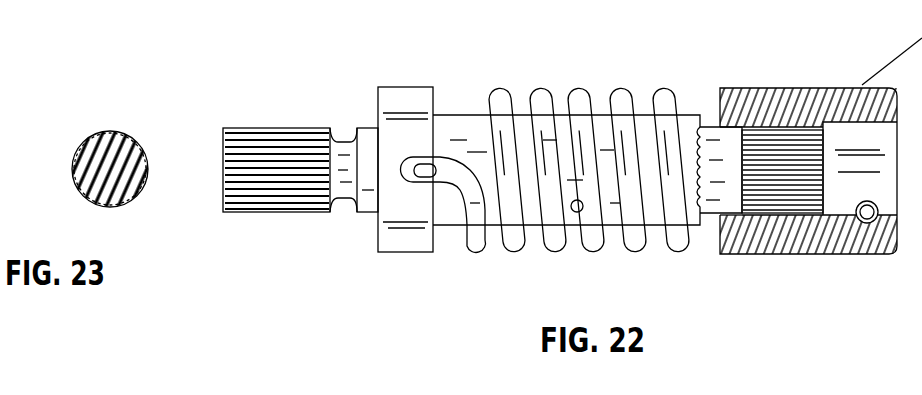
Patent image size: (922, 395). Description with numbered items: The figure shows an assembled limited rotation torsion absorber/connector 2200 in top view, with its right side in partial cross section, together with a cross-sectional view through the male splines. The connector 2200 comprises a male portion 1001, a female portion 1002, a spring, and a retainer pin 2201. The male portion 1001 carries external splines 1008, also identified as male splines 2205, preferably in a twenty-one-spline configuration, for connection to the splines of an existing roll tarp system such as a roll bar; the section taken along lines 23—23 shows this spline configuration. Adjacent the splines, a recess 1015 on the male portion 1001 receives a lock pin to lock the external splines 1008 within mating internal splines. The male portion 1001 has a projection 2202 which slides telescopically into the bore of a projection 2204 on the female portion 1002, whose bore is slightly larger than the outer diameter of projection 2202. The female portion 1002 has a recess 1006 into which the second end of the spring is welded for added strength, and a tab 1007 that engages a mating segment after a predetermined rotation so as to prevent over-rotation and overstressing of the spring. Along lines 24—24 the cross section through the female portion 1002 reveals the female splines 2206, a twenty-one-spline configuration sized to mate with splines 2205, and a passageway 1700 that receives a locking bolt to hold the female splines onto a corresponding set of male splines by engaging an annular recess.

In FIG. 22, the section lines 23— 23 is at (230, 190).
In FIG. 22, the section lines 24— 24 is at (820, 181).
In FIG. 22, the male portion 1001 is at (369, 154).
In FIG. 22, the female portion 1002 is at (553, 138).
In FIG. 22, the recess 1006 is at (706, 129).
In FIG. 22, the tab 1007 is at (589, 150).
In FIG. 22, the external splines 1008 is at (225, 157).
In FIG. 22, the recess 1015 is at (373, 221).
In FIG. 22, the passageway 1700 is at (821, 176).
In FIG. 22, the limited rotation torsion absorber/connector 2200 is at (506, 197).
In FIG. 22, the retainer pin 2201 is at (607, 252).
In FIG. 22, the projection 2202 is at (461, 144).
In FIG. 22, the projection 2204 is at (733, 130).
In FIG. 23, the external splines 2205 is at (127, 200).
In FIG. 22, the external splines 2205 is at (290, 231).
In FIG. 22, the female splines 2206 is at (761, 225).